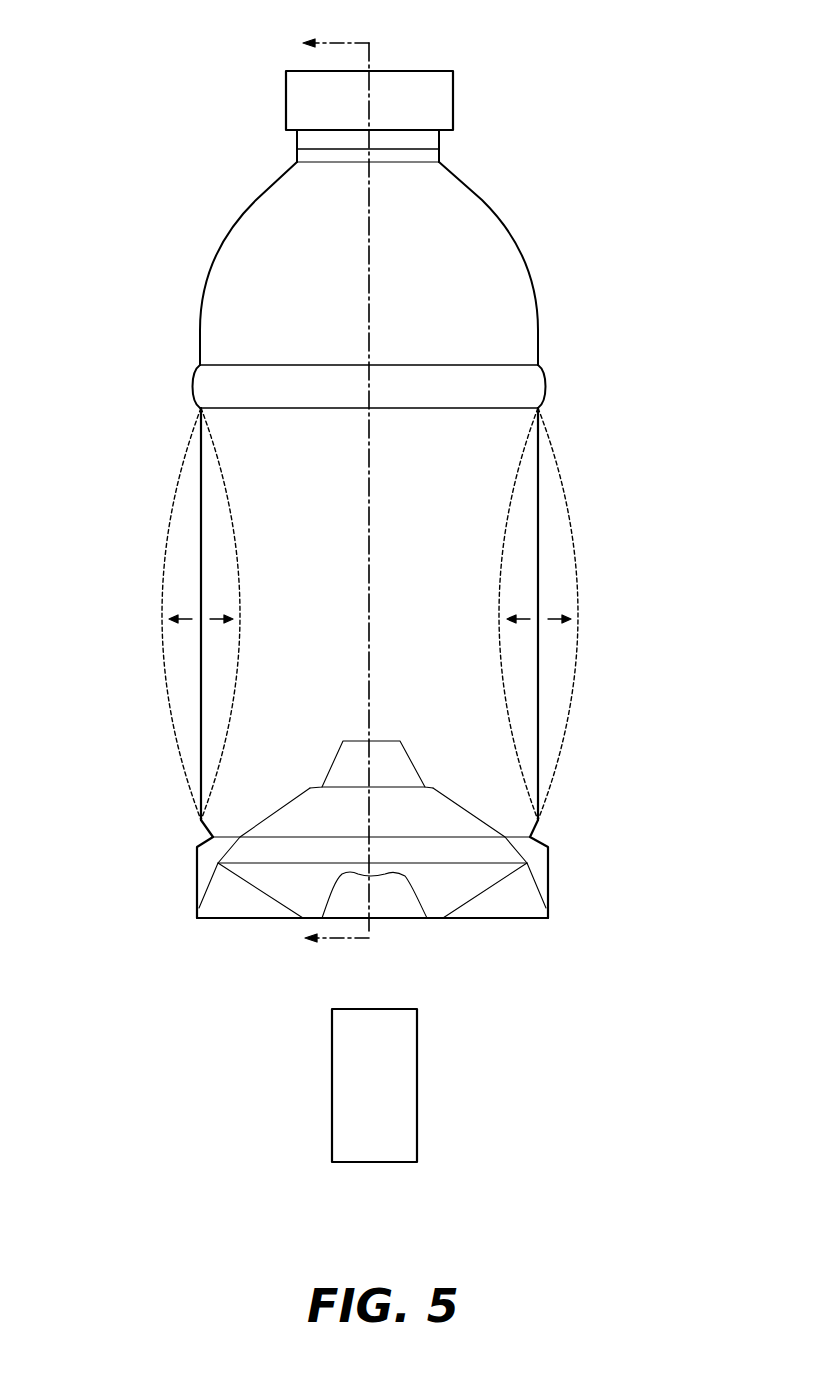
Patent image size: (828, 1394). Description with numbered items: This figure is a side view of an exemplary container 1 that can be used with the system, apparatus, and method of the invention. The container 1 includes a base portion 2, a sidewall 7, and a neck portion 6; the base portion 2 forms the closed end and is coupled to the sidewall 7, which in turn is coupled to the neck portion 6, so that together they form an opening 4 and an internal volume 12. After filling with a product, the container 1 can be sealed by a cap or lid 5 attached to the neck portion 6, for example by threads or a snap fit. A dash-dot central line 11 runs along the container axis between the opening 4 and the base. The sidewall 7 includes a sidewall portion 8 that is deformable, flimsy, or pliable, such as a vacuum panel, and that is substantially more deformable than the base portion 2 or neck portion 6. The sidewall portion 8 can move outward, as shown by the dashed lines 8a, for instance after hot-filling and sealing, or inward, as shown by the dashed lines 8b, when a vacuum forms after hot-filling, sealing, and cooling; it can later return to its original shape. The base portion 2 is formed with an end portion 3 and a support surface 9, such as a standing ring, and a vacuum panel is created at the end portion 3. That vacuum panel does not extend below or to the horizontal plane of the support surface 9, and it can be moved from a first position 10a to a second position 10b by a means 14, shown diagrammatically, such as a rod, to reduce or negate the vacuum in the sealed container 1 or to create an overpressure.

The container 1 is at (565, 140).
The base portion 2 is at (197, 862).
The end portion 3 is at (407, 941).
The opening 4 is at (382, 71).
The cap or lid 5 is at (286, 95).
The neck portion 6 is at (297, 152).
The sidewall 7 is at (101, 413).
The sidewall portion 8 is at (357, 611).
The outward position of sidewall portion 8a is at (167, 538).
The inward position of sidewall portion 8b is at (235, 690).
The support surface 9 is at (197, 918).
The first position of vacuum panel 10a is at (468, 896).
The second position of vacuum panel 10b is at (427, 787).
The central axis 11 is at (369, 270).
The internal volume 12 is at (401, 599).
The means for moving the vacuum panel 14 is at (417, 1083).